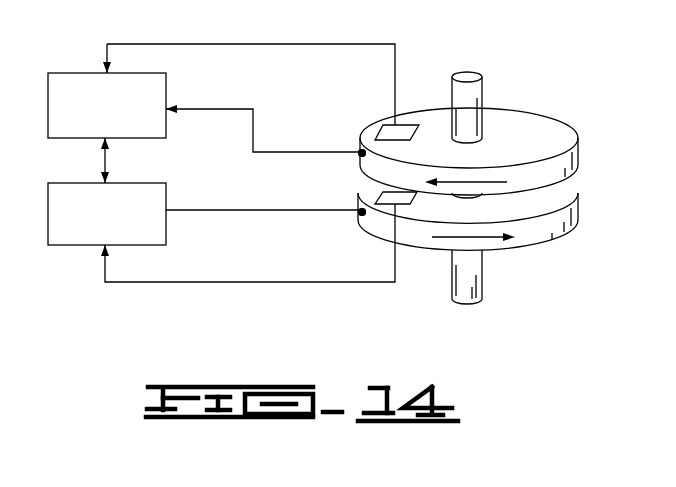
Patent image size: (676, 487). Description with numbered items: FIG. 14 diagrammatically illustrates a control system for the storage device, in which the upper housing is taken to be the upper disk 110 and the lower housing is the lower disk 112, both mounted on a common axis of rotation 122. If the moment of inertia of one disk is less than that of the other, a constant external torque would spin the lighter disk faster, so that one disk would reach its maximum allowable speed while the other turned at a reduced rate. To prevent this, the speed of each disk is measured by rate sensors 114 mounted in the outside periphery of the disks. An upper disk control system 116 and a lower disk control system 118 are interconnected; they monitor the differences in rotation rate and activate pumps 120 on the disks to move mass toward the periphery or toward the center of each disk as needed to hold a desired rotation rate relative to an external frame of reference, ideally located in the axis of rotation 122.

The upper disk 110 is at (580, 150).
The lower disk 112 is at (580, 213).
The rate sensors 114 is at (360, 150).
The upper disk control system 116 is at (68, 73).
The lower disk control system 118 is at (68, 183).
The pumps 120 is at (398, 126).
The axis of rotation 122 is at (482, 83).